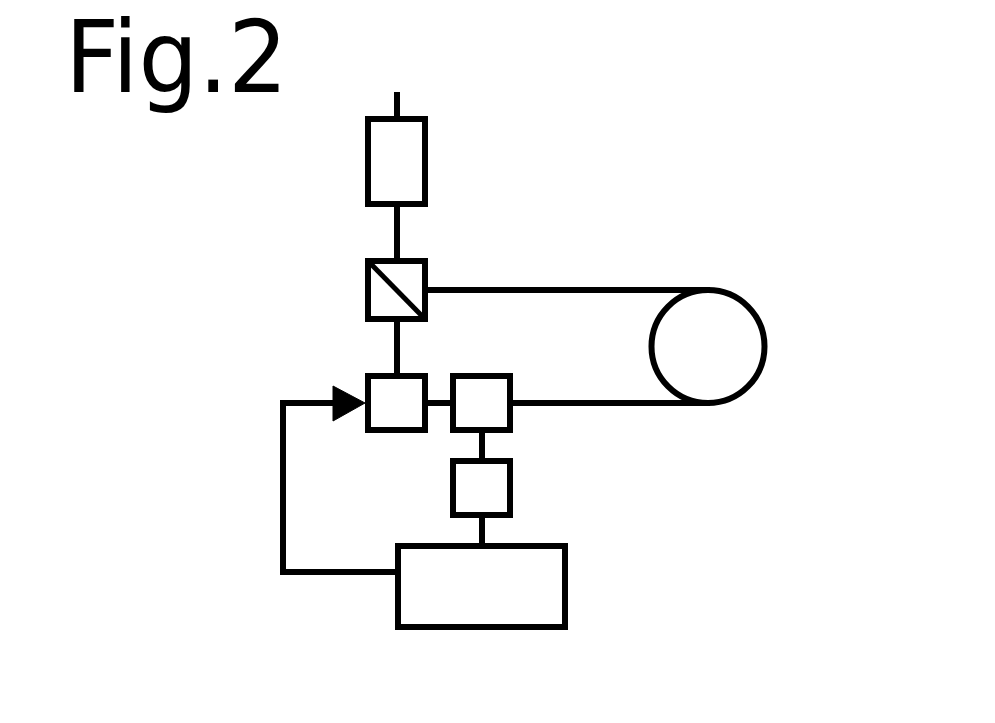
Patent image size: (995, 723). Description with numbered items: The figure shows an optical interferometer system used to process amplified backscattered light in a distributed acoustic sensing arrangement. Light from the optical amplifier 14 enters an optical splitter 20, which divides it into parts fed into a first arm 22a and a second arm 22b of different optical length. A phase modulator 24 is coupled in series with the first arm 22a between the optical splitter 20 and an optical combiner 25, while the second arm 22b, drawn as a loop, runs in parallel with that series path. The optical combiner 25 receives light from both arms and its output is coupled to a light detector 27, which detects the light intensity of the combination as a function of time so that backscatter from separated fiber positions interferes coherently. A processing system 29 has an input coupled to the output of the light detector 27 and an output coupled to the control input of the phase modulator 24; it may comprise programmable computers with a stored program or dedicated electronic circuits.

The optical amplifier 14 is at (428, 173).
The optical splitter 20 is at (365, 293).
The first arm 22a is at (395, 350).
The second arm 22b is at (768, 342).
The phase modulator 24 is at (398, 435).
The optical combiner 25 is at (480, 373).
The light detector 27 is at (512, 485).
The processing system 29 is at (568, 570).